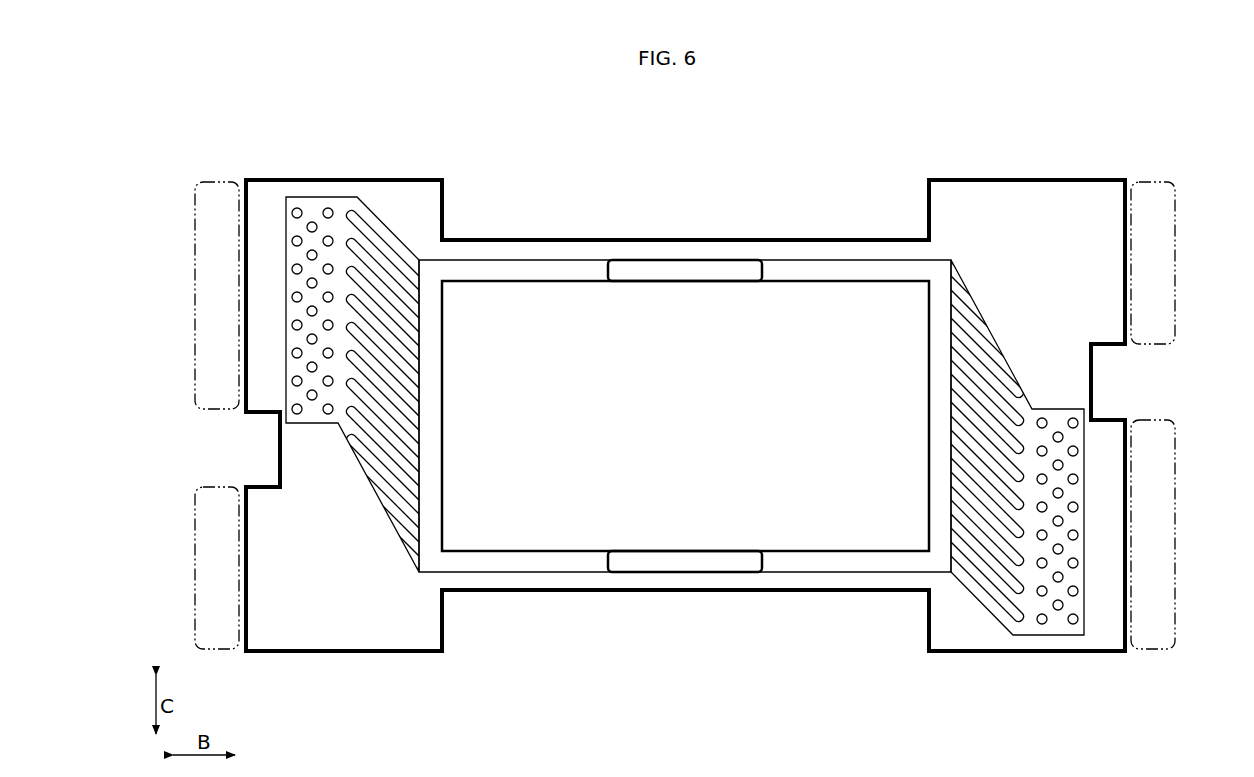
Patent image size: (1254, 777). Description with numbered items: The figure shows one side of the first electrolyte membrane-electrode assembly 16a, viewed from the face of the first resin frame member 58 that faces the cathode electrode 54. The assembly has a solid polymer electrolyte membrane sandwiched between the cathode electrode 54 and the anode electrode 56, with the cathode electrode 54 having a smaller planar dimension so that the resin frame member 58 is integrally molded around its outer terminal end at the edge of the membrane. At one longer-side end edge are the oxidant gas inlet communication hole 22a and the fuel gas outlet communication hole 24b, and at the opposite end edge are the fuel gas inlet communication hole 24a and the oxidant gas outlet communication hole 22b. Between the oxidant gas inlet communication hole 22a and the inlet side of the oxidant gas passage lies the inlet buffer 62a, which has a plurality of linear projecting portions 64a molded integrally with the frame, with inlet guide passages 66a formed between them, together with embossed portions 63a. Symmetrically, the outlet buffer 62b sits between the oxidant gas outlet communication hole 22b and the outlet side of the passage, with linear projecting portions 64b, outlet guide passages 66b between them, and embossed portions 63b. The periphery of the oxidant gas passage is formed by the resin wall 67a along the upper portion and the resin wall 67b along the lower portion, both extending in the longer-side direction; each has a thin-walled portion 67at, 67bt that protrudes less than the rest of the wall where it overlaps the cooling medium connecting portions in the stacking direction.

The first electrolyte membrane-electrode assembly 16a is at (779, 100).
The first resin frame member 58 is at (1008, 178).
The cathode electrode 54 is at (546, 305).
The anode electrode 56 is at (591, 306).
The resin wall 67a is at (690, 270).
The resin wall 67b is at (690, 560).
The thin-walled portion 67at is at (506, 272).
The thin-walled portion 67bt is at (532, 560).
The inlet buffer 62a is at (375, 198).
The outlet buffer 62b is at (978, 629).
The linear projecting portions 64a is at (397, 253).
The linear projecting portions 64b is at (968, 587).
The inlet guide passages 66a is at (383, 257).
The outlet guide passages 66b is at (985, 592).
The embossed portions 63a is at (312, 400).
The embossed portions 63b is at (1058, 432).
The oxidant gas inlet communication hole 22a is at (210, 230).
The oxidant gas outlet communication hole 22b is at (1165, 500).
The fuel gas inlet communication hole 24a is at (1163, 249).
The fuel gas outlet communication hole 24b is at (210, 557).